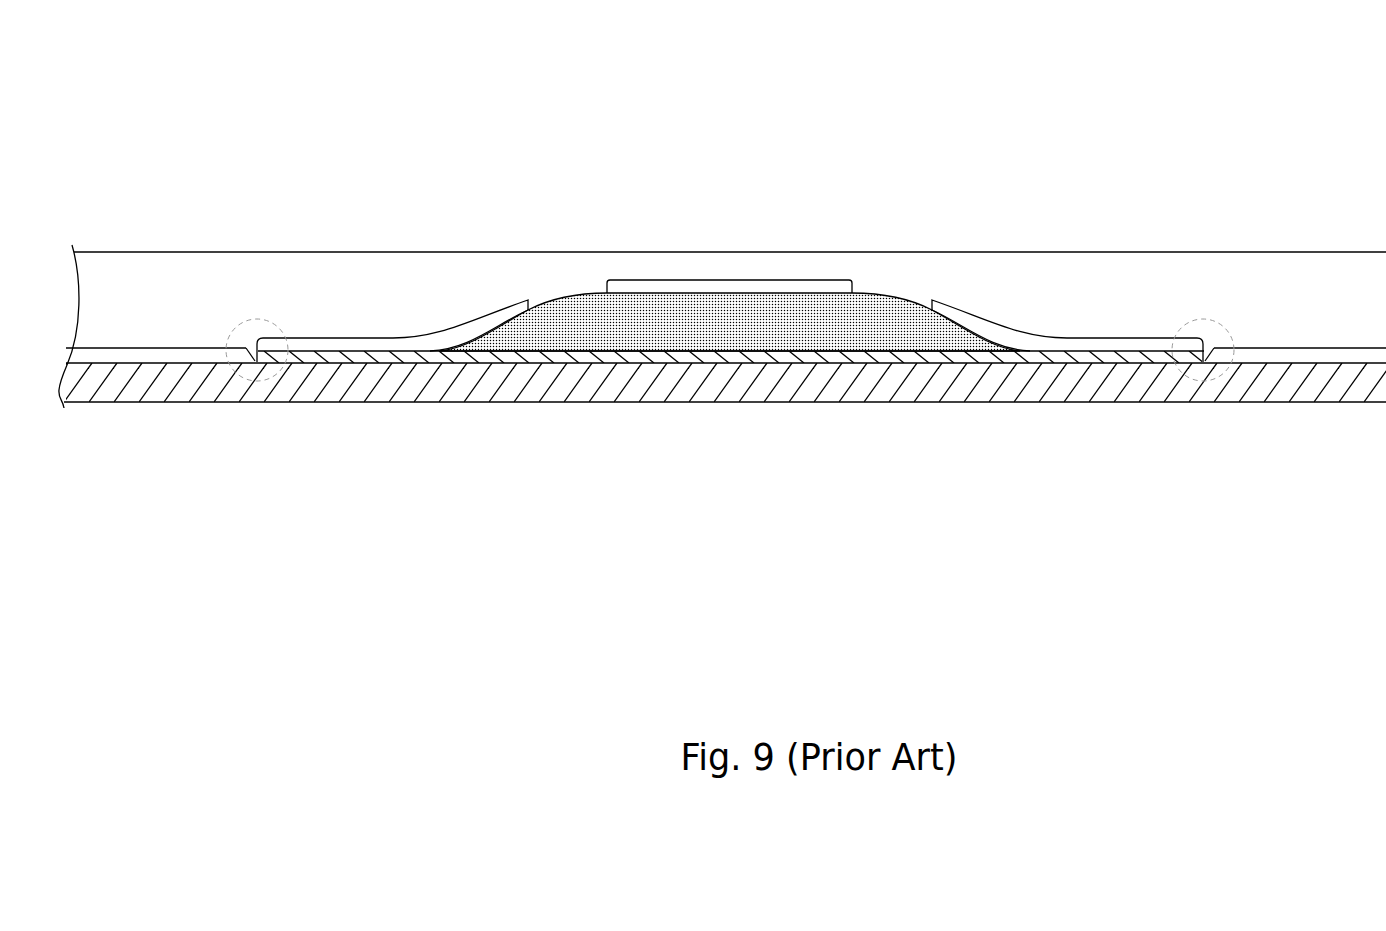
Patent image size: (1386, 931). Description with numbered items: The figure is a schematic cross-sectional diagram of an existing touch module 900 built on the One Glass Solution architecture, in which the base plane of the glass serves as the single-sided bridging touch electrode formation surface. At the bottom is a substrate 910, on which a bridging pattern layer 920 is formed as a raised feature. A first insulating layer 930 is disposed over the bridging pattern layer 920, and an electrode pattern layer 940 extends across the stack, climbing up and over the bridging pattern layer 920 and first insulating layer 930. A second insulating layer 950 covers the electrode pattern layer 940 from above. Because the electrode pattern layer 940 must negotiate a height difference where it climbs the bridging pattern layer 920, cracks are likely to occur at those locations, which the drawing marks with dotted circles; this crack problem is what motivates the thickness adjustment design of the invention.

The touch module 900 is at (1252, 67).
The substrate 910 is at (852, 388).
The bridging pattern layer 920 is at (650, 358).
The first insulating layer 930 is at (537, 337).
The electrode pattern layer 940 is at (1123, 348).
The second insulating layer 950 is at (183, 273).